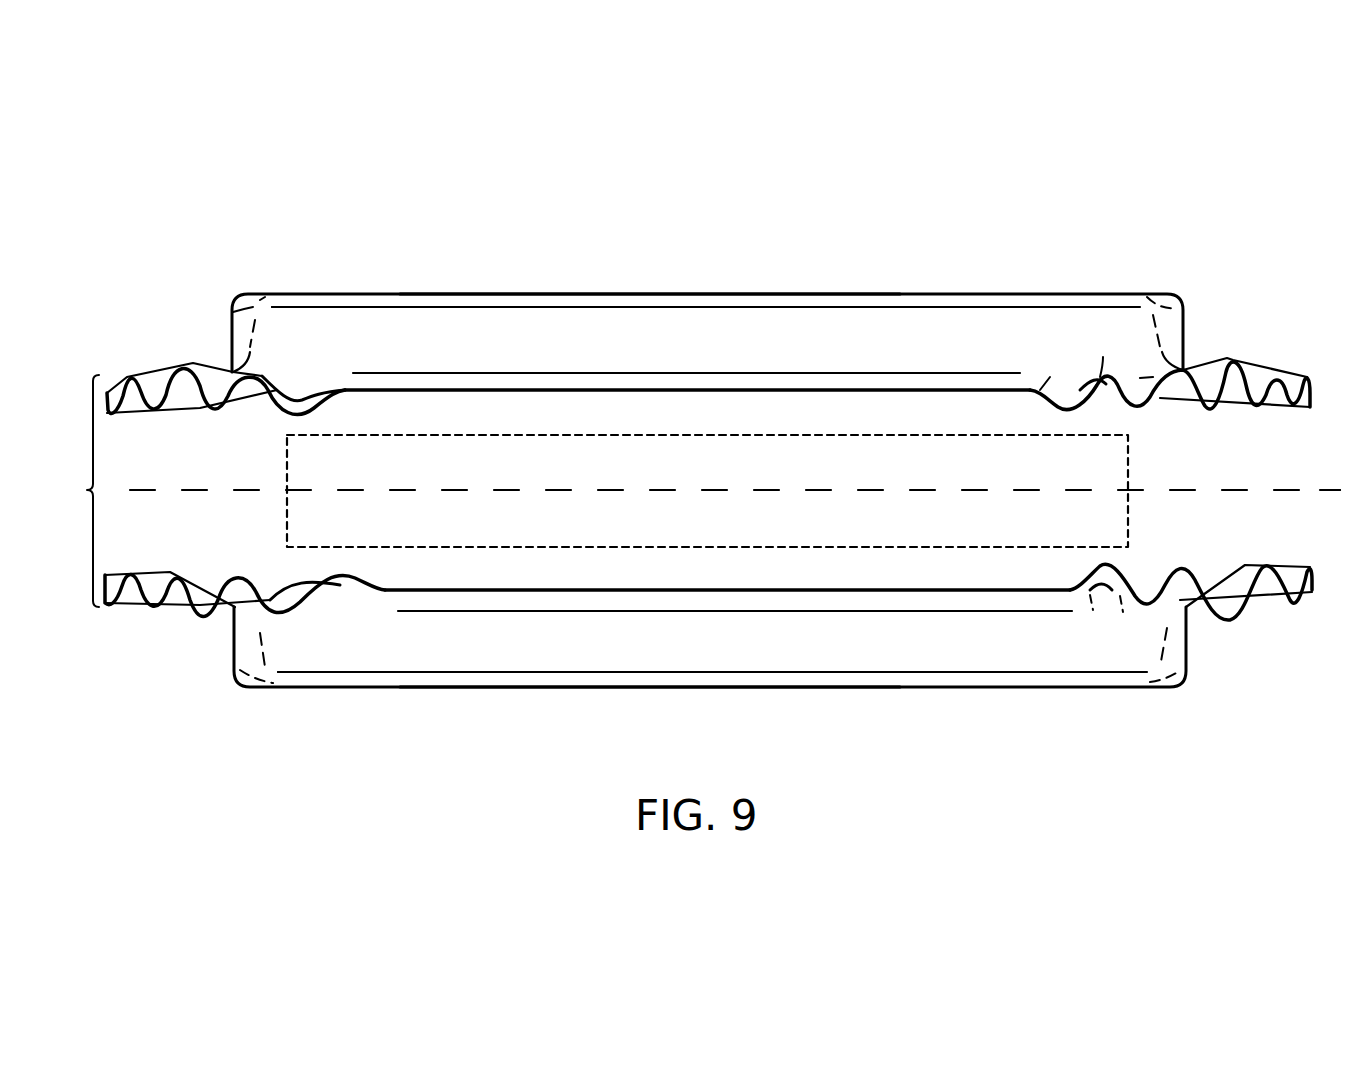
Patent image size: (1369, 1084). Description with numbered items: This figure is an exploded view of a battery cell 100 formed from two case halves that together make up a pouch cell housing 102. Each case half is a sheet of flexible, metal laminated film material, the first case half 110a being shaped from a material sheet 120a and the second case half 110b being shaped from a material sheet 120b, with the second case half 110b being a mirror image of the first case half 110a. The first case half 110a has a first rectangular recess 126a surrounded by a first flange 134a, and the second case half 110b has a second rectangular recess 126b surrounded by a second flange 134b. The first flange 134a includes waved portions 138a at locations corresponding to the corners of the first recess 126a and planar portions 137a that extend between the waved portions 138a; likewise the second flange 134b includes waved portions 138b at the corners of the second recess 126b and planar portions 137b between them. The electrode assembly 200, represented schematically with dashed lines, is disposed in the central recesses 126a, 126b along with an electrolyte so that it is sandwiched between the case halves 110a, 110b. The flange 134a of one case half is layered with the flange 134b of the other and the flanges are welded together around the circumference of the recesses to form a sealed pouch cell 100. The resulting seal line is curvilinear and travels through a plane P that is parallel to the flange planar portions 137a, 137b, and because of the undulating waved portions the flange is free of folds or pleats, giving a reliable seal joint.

The battery cell 100 is at (316, 198).
The pouch cell housing 102 is at (69, 491).
The first case half 110a is at (497, 310).
The second case half 110b is at (523, 667).
The material sheet 120a is at (337, 310).
The material sheet 120b is at (338, 667).
The first rectangular recess 126a is at (656, 293).
The second rectangular recess 126b is at (420, 687).
The first flange 134a is at (937, 388).
The second flange 134b is at (930, 598).
The planar portions 137a is at (805, 388).
The planar portions 137b is at (765, 598).
The waved portions 138a is at (165, 378).
The waved portions 138b is at (175, 625).
The electrode assembly 200 is at (1128, 527).
The plane P is at (1328, 490).